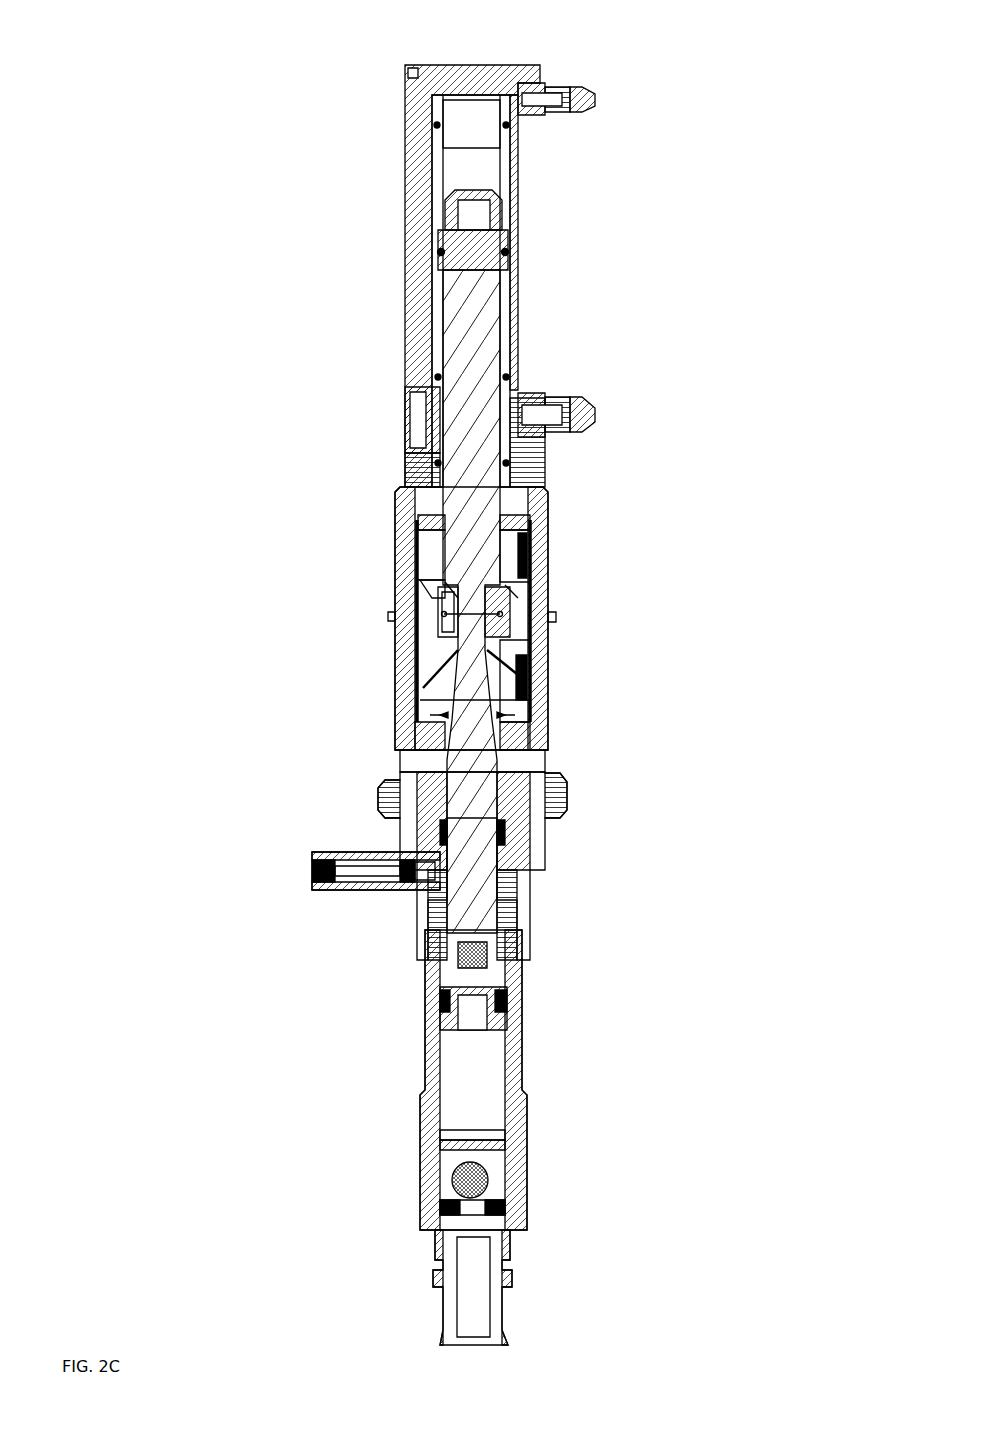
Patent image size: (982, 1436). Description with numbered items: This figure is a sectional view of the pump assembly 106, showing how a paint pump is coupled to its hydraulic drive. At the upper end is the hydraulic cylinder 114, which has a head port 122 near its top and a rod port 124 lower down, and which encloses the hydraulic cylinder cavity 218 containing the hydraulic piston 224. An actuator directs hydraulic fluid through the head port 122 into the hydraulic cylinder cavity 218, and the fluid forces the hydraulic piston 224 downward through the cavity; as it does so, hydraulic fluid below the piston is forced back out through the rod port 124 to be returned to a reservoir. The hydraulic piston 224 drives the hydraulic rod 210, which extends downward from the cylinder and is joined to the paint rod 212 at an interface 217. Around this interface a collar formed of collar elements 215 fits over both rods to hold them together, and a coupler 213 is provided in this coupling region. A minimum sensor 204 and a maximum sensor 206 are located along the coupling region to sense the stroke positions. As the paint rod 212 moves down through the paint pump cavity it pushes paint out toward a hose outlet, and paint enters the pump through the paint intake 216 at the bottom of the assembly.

The pump assembly 106 is at (533, 55).
The head port 122 is at (598, 100).
The hydraulic cylinder cavity 218 is at (497, 165).
The hydraulic cylinder 114 is at (518, 212).
The hydraulic piston 224 is at (507, 248).
The hydraulic rod 210 is at (491, 305).
The rod port 124 is at (598, 418).
The coupler 213 is at (437, 591).
The minimum sensor 204 is at (527, 537).
The interface 217 is at (473, 615).
The paint rod 212 is at (473, 715).
The maximum sensor 206 is at (527, 707).
The collar elements 215 is at (557, 797).
The paint intake 216 is at (480, 1330).